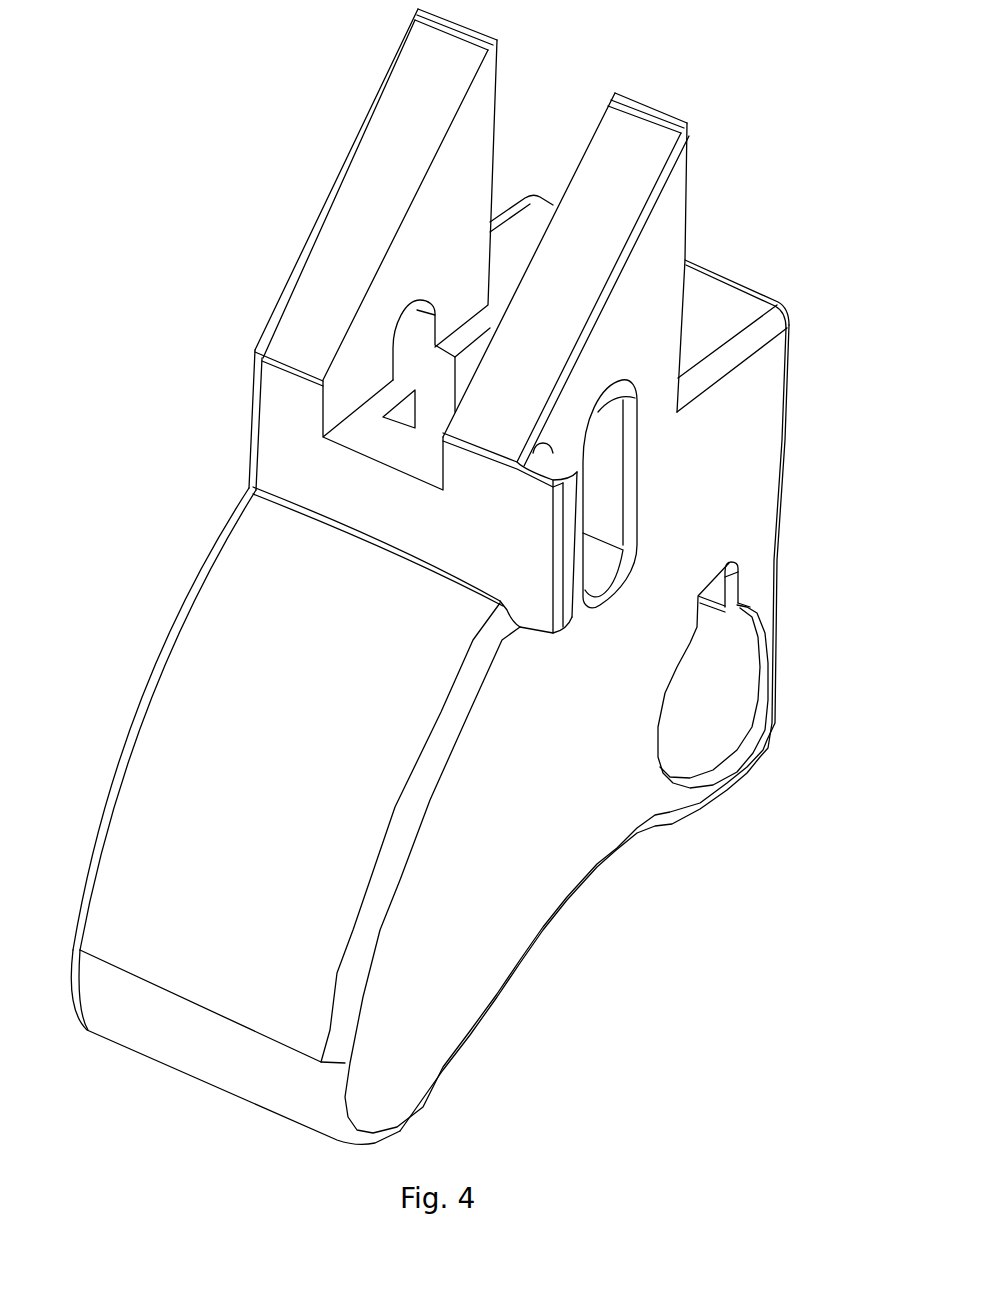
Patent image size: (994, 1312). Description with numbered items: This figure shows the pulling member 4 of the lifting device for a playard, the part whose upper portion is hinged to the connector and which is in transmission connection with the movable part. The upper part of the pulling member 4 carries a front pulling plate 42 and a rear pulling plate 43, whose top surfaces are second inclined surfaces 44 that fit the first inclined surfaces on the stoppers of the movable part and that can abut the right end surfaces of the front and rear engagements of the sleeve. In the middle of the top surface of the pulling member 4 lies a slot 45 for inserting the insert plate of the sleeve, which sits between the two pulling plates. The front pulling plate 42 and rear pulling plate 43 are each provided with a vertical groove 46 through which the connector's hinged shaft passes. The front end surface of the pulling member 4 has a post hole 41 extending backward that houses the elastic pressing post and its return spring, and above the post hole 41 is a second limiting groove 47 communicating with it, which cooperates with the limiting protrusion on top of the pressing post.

The pulling member 4 is at (430, 1017).
The post hole 41 is at (693, 727).
The front pulling plate 42 is at (658, 288).
The rear pulling plate 43 is at (467, 172).
The second inclined surfaces 44 is at (623, 152).
The slot 45 is at (433, 420).
The vertical grooves 46 is at (603, 427).
The second limiting groove 47 is at (717, 590).